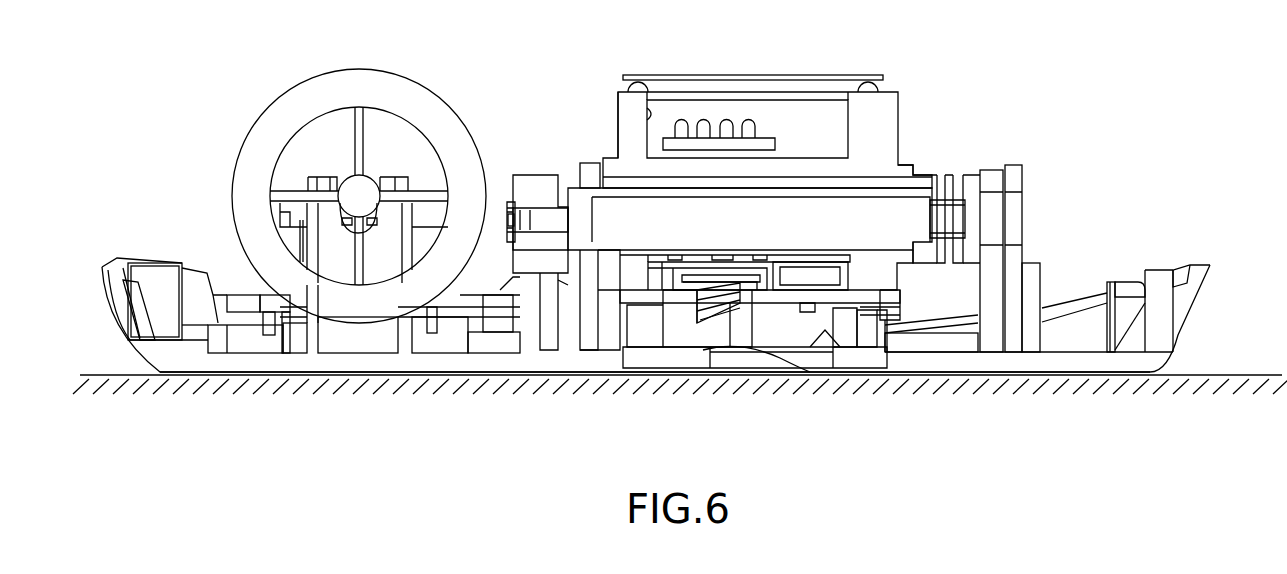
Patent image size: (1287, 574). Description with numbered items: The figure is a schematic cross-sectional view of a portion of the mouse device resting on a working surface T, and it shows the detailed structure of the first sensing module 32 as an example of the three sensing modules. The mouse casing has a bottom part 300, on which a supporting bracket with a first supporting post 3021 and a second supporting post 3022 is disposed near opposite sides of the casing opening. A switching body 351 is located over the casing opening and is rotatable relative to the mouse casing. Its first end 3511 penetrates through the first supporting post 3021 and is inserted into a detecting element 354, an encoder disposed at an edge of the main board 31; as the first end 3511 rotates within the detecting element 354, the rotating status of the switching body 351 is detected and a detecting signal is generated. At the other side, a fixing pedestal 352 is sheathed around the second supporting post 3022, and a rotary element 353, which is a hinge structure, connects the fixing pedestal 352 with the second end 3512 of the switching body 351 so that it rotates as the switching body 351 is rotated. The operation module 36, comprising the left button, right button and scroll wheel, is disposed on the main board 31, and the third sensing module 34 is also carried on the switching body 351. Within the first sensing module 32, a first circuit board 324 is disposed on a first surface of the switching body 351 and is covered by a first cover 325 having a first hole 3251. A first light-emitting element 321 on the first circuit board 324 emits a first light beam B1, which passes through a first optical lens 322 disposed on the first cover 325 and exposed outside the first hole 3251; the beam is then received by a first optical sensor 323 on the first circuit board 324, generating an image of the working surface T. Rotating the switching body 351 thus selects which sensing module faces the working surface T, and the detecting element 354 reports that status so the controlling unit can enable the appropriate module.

The working surface T is at (1215, 377).
The bottom part 300 is at (1048, 362).
The main board 31 is at (250, 300).
The operation module 36 is at (295, 83).
The third sensing module 34 is at (748, 66).
The switching body 351 is at (872, 119).
The second end 3512 is at (907, 165).
The first supporting post 3021 is at (590, 175).
The detecting element 354 is at (535, 195).
The first end 3511 is at (513, 218).
The first optical sensor 323 is at (710, 270).
The first light-emitting element 321 is at (803, 303).
The first circuit board 324 is at (650, 295).
The first light beam B1 is at (748, 329).
The first cover 325 is at (673, 358).
The first hole 3251 is at (745, 358).
The first optical lens 322 is at (870, 337).
The first sensing module 32 is at (867, 316).
The rotary element 353 is at (950, 166).
The fixing pedestal 352 is at (993, 227).
The second supporting post 3022 is at (1013, 257).